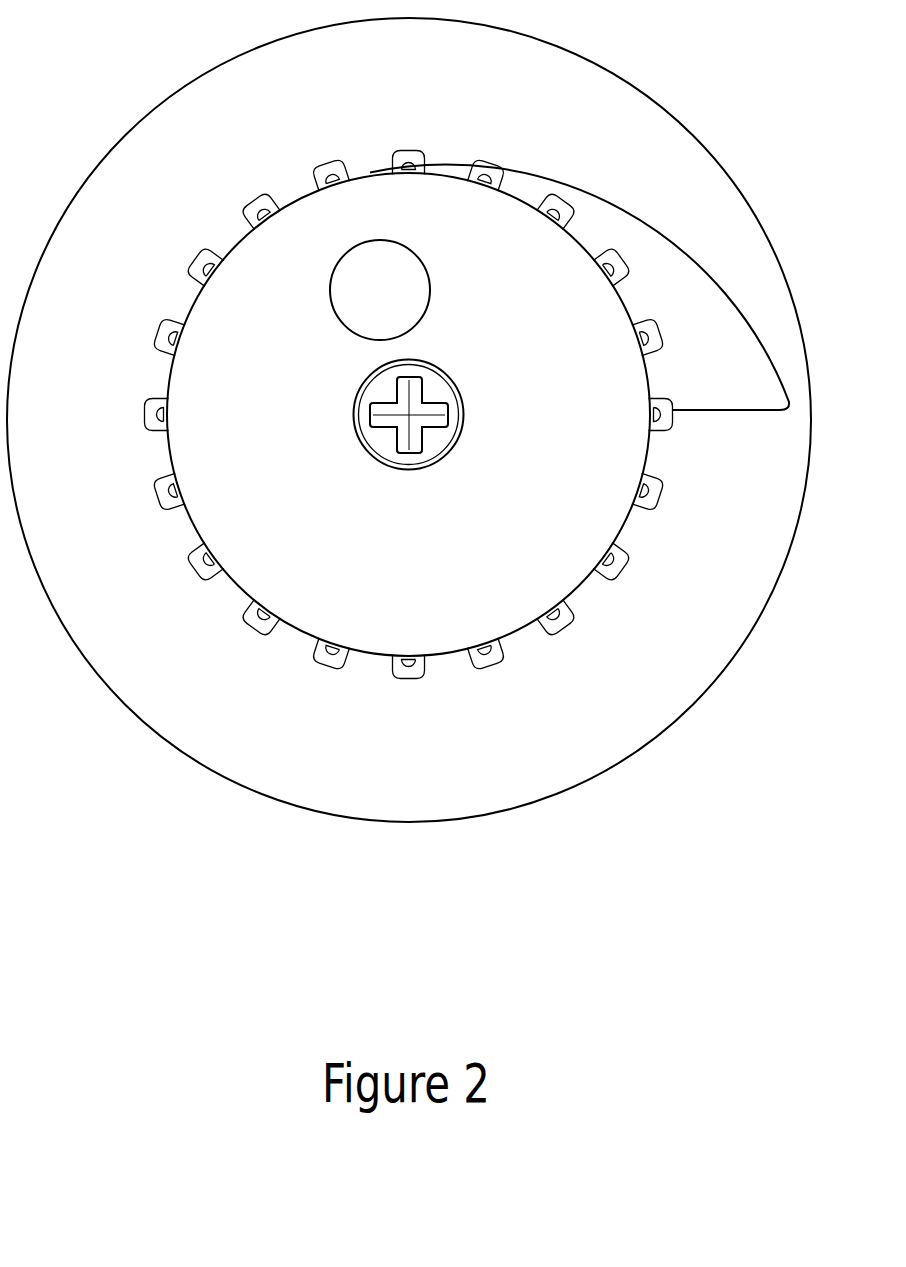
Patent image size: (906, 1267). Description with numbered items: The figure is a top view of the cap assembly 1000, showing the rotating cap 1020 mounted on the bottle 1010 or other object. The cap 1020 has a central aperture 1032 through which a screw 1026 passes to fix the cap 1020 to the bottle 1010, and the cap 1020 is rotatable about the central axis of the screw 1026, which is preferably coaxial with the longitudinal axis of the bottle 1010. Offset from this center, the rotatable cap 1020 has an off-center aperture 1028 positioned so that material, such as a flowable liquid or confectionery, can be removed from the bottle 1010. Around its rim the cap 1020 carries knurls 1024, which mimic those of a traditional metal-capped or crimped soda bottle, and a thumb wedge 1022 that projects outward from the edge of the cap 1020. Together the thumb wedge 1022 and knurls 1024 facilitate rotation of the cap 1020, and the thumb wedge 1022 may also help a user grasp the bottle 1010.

The rotor assembly 1000 is at (435, 420).
The bottle 1010 is at (748, 638).
The rotating cap 1020 is at (356, 553).
The thumb wedge 1022 is at (763, 384).
The knurls 1024 is at (657, 493).
The screw 1026 is at (442, 397).
The off-center aperture 1028 is at (332, 276).
The central aperture 1032 is at (433, 462).